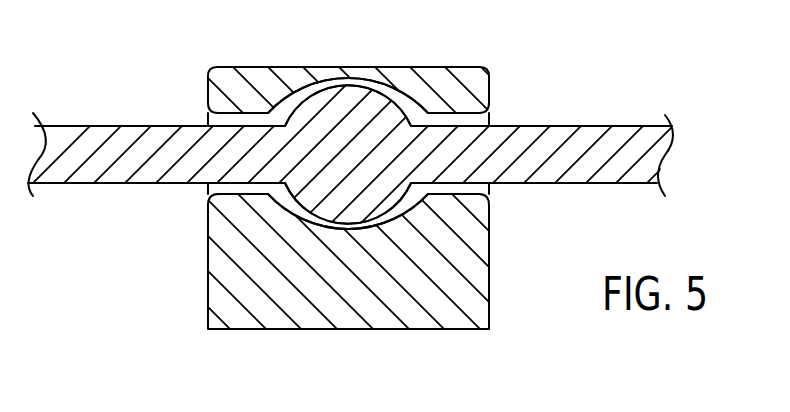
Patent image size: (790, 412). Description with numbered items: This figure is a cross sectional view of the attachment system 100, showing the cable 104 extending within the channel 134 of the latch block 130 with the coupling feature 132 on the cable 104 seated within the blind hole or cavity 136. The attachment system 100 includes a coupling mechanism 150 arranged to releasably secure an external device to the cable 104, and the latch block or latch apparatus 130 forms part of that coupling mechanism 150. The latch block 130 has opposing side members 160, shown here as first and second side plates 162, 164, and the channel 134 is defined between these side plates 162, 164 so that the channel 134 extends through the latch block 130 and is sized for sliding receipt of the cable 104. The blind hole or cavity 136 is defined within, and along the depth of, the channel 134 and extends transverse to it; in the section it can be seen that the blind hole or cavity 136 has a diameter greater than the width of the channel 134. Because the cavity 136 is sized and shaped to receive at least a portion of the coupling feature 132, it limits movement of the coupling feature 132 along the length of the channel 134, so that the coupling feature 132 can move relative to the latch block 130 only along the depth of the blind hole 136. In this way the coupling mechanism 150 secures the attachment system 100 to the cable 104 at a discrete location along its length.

The attachment system 100 is at (541, 45).
The cable 104 is at (548, 168).
The latch block 130 is at (440, 297).
The coupling feature 132 is at (318, 188).
The channel 134 is at (494, 107).
The blind hole 136 is at (405, 101).
The coupling mechanism 150 is at (355, 44).
The opposing side members 160 is at (348, 177).
The first side plate 162 is at (232, 302).
The second side plate 164 is at (237, 85).